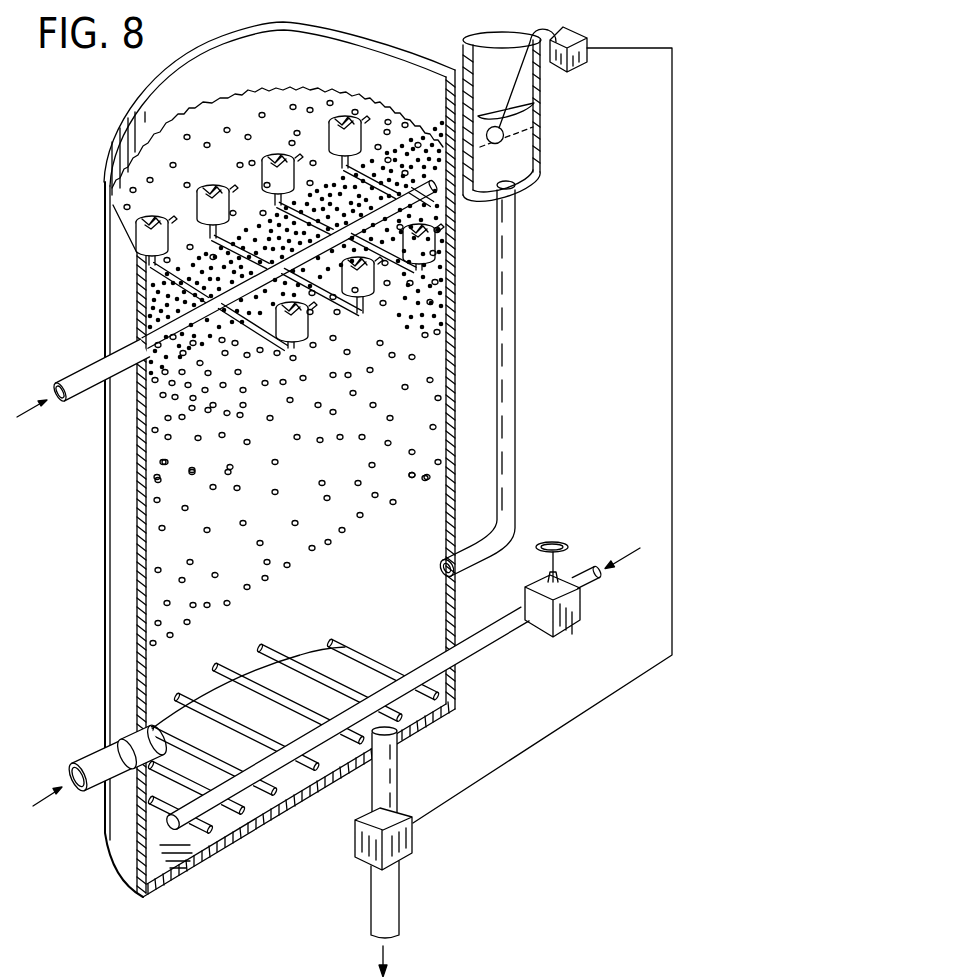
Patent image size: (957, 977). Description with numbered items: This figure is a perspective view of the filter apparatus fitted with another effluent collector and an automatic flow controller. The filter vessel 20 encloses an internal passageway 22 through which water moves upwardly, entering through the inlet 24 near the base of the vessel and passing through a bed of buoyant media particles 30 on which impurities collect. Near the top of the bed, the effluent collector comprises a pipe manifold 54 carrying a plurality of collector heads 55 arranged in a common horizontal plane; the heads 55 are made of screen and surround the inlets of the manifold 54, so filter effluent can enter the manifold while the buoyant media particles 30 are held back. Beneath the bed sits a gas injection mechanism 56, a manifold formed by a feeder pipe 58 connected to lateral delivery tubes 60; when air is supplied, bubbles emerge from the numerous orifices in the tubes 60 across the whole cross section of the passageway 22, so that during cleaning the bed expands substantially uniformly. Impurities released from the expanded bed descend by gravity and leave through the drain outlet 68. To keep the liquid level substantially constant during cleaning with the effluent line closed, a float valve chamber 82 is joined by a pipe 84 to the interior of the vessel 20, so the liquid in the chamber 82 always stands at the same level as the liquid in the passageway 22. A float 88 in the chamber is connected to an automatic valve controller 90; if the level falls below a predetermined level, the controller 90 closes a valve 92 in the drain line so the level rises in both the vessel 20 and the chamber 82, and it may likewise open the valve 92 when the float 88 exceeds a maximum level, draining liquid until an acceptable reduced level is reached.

The filter vessel 20 is at (127, 613).
The internal passageway 22 is at (427, 527).
The inlet 24 is at (150, 732).
The buoyant media particles 30 is at (130, 340).
The pipe manifold 54 is at (207, 338).
The collector heads 55 is at (333, 120).
The gas injection mechanism 56 is at (259, 806).
The feeder pipe 58 is at (298, 775).
The lateral delivery tubes 60 is at (340, 647).
The drain outlet 68 is at (378, 730).
The float valve chamber 82 is at (470, 40).
The pipe 84 is at (515, 353).
The float 88 is at (503, 137).
The automatic valve controller 90 is at (592, 34).
The valve 92 is at (400, 827).